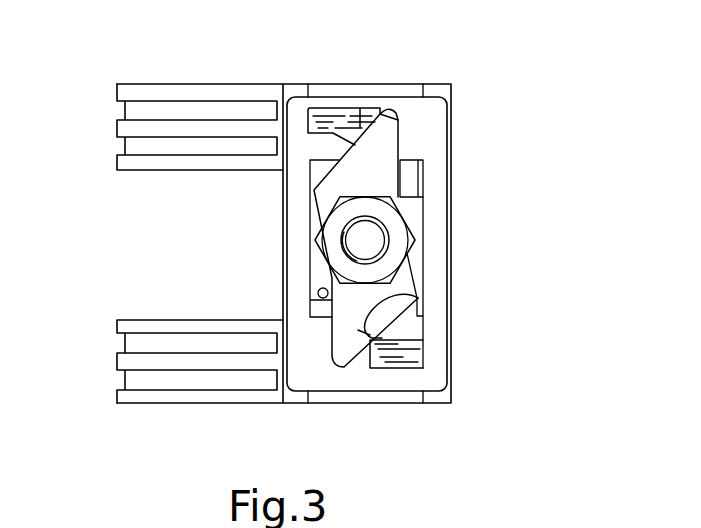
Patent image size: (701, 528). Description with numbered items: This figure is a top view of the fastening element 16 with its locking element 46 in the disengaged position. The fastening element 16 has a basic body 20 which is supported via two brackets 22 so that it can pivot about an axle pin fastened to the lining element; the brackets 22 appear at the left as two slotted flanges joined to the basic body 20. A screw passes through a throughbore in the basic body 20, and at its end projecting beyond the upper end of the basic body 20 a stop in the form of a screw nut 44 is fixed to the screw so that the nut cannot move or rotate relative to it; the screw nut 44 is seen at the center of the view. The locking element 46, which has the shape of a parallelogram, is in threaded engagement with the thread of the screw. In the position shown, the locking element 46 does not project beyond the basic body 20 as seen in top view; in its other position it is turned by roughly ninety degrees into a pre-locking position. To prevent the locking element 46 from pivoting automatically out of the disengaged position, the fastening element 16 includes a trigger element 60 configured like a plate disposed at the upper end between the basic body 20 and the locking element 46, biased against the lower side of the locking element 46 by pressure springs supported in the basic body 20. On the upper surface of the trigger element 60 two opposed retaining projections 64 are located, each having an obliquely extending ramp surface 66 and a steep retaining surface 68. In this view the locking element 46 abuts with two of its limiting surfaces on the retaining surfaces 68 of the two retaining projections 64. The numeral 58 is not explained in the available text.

The fastening element 16 is at (508, 205).
The basic body 20 is at (446, 397).
The brackets 22 is at (175, 145).
The screw nut 44 is at (397, 232).
The locking element 46 is at (378, 163).
The pivot pin 58 is at (318, 293).
The trigger element 60 is at (312, 368).
The retaining projections 64 is at (349, 119).
The ramp surfaces 66 is at (332, 120).
The retaining surfaces 68 is at (372, 127).